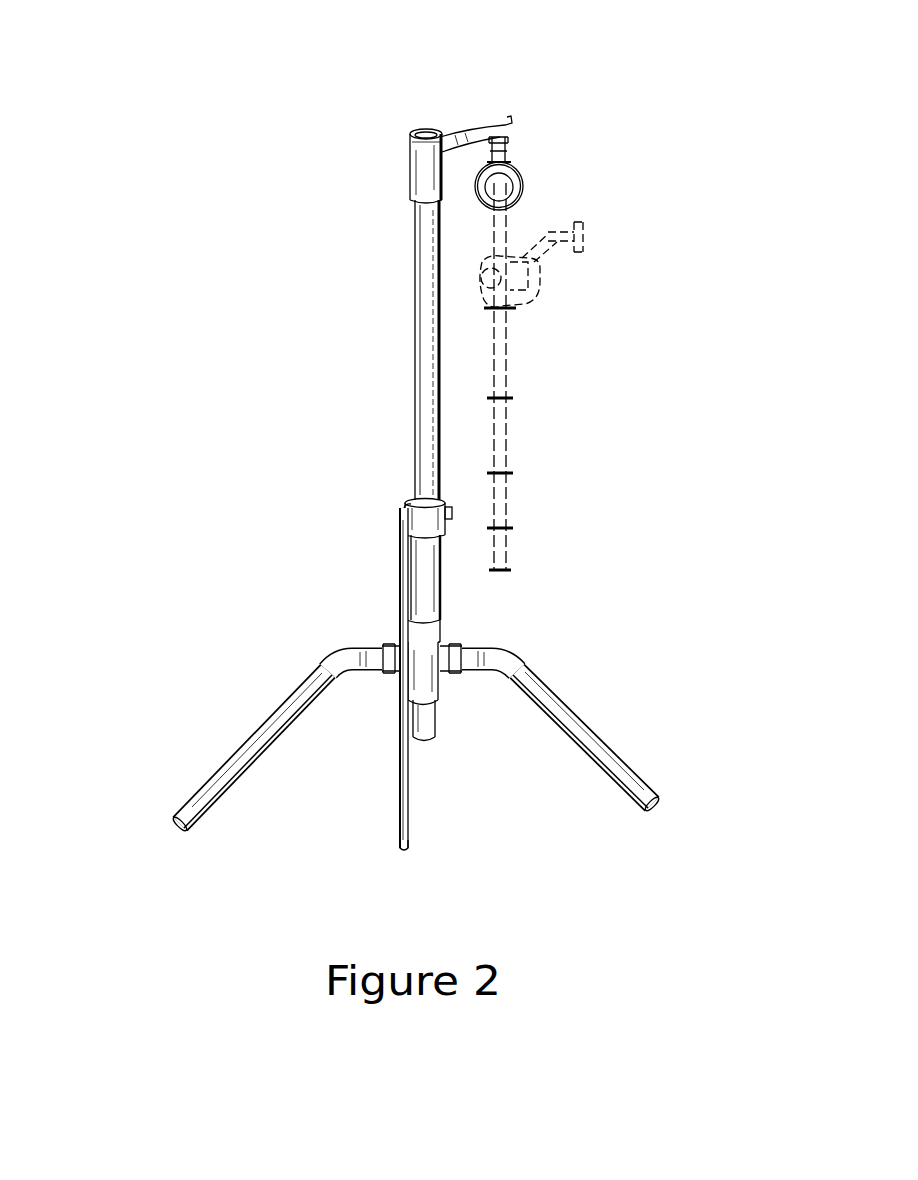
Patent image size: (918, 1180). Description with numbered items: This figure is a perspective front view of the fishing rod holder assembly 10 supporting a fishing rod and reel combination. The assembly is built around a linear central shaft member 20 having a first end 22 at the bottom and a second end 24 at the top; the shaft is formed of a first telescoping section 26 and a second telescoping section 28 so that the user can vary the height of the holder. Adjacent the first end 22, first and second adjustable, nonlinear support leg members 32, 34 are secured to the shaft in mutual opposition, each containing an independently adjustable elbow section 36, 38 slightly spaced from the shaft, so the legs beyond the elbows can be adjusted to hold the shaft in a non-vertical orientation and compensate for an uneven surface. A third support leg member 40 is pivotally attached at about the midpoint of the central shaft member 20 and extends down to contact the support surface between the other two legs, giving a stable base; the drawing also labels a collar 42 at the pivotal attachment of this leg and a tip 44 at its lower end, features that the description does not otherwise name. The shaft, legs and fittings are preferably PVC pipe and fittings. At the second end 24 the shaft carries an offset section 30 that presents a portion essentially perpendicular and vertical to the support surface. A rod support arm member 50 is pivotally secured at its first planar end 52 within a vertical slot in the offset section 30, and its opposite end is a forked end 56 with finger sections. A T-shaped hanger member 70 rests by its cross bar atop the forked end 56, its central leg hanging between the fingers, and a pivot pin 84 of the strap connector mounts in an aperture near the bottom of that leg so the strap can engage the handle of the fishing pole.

The fishing rod holder assembly 10 is at (272, 373).
The central shaft member 20 is at (362, 432).
The first end 22 is at (436, 724).
The second end 24 is at (414, 228).
The first telescoping section 26 is at (437, 597).
The second telescoping section 28 is at (424, 323).
The offset section 30 is at (411, 165).
The first support leg member 32 is at (240, 748).
The second support leg member 34 is at (637, 777).
The elbow section 36 is at (352, 648).
The elbow section 38 is at (485, 652).
The third support leg member 40 is at (403, 746).
The coupling collar 42 is at (400, 530).
The rod tip 44 is at (400, 843).
The rod support arm member 50 is at (468, 104).
The first planar end 52 is at (425, 132).
The forked end 56 is at (510, 123).
The T-shaped hanger member 70 is at (503, 137).
The pivot pin 84 is at (512, 147).